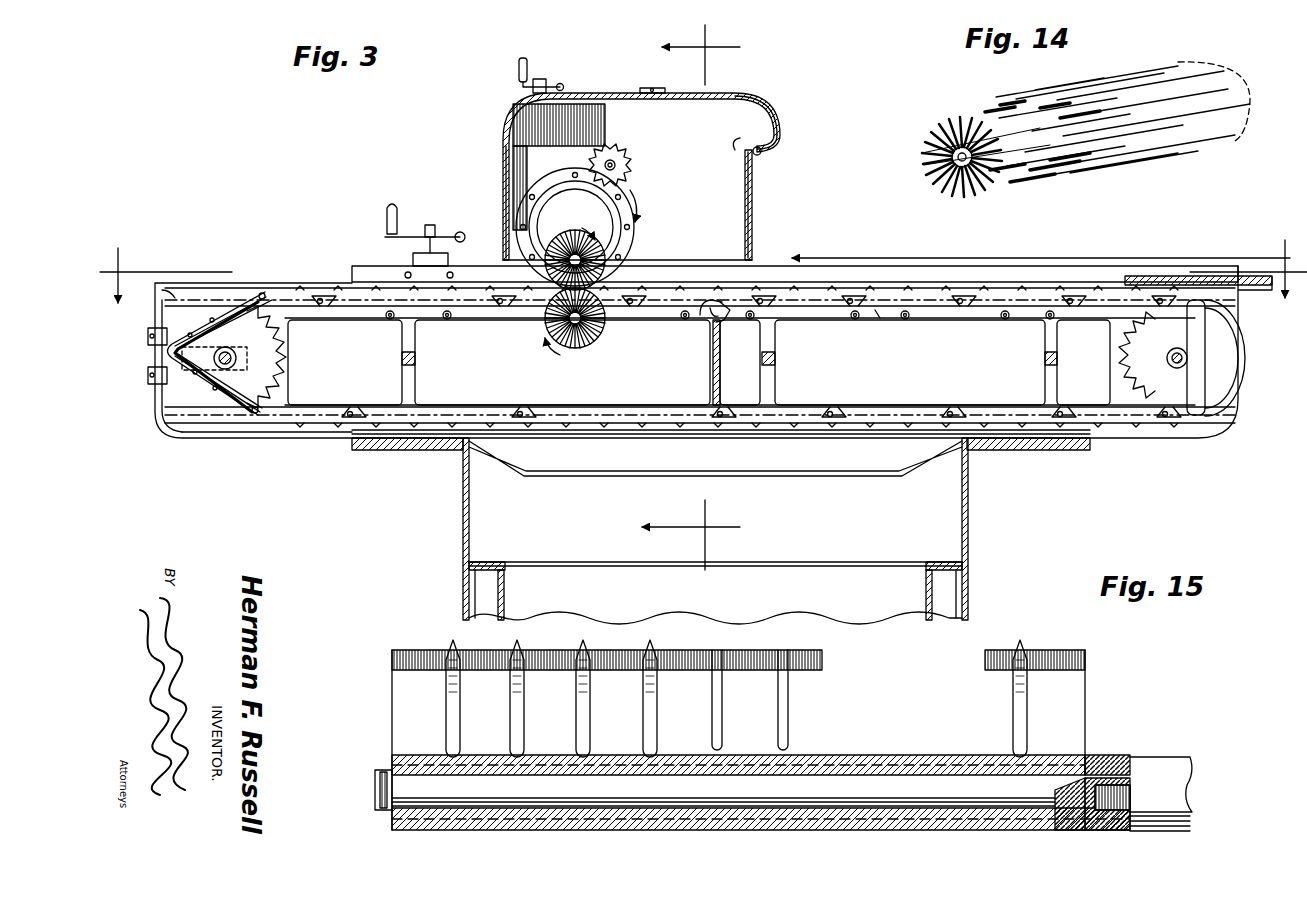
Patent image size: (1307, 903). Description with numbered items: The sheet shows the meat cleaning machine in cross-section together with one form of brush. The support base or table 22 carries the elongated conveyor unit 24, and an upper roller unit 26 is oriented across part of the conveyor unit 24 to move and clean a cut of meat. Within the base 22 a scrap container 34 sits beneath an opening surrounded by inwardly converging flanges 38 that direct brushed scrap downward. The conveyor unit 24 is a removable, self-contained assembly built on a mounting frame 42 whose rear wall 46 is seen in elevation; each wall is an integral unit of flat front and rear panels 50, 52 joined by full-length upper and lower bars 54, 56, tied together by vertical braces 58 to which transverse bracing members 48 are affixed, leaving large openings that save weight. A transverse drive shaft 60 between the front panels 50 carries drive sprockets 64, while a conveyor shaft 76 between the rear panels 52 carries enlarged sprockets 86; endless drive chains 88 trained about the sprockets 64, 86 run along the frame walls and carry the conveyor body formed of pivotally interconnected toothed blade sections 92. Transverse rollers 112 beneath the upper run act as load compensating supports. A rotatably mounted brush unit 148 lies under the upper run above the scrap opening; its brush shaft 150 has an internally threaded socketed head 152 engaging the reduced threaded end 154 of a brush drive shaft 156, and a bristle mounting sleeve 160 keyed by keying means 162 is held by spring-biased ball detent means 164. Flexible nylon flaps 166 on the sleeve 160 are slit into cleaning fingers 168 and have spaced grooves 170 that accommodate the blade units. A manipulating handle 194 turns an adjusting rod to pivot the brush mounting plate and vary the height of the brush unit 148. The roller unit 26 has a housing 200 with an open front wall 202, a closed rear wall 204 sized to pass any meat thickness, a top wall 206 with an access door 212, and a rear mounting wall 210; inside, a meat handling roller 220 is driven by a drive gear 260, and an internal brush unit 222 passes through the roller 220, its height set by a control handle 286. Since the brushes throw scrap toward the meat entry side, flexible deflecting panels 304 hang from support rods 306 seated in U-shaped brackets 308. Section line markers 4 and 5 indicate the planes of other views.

In FIG. 3, the mounting base or table 22 is at (985, 564).
In FIG. 3, the conveyor unit 24 is at (1062, 260).
In FIG. 3, the upper roller unit 26 is at (505, 115).
In FIG. 3, the scrap container 34 is at (830, 570).
In FIG. 3, the inwardly converging flanges 38 is at (830, 463).
In FIG. 3, the mounting frame 42 is at (200, 444).
In FIG. 3, the rear wall 46 is at (228, 442).
In FIG. 3, the wall bracing bars 48 is at (416, 357).
In FIG. 3, the front panel 50 is at (1238, 386).
In FIG. 3, the rear panel 52 is at (164, 408).
In FIG. 3, the upper bar 54 is at (880, 318).
In FIG. 3, the lower bar 56 is at (905, 398).
In FIG. 3, the vertical braces 58 is at (420, 387).
In FIG. 3, the transverse drive shaft 60 is at (1166, 361).
In FIG. 3, the drive sprockets 64 is at (1215, 352).
In FIG. 3, the conveyor shaft 76 is at (228, 351).
In FIG. 3, the enlarged sprockets 86 is at (282, 356).
In FIG. 3, the endless drive chains 88 is at (212, 304).
In FIG. 3, the blade sections 92 is at (225, 376).
In FIG. 3, the rollers 112 is at (470, 328).
In FIG. 3, the brush unit 148 is at (586, 352).
In FIG. 14, the brush unit 148 is at (955, 98).
In FIG. 15, the brush unit 148 is at (385, 702).
In FIG. 15, the brush shaft 150 is at (1010, 790).
In FIG. 15, the socketed head 152 is at (1095, 765).
In FIG. 15, the reduced threaded projecting end 154 is at (1120, 778).
In FIG. 15, the brush drive shaft 156 is at (1172, 780).
In FIG. 15, the bristle mounting sleeve 160 is at (915, 760).
In FIG. 15, the keying means 162 is at (390, 760).
In FIG. 15, the spring-biased ball detent means 164 is at (385, 768).
In FIG. 14, the flexible nylon flaps 166 is at (950, 143).
In FIG. 15, the flexible nylon flaps 166 is at (1088, 680).
In FIG. 15, the cleaning fingers 168 is at (1055, 648).
In FIG. 15, the spaced grooves 170 is at (745, 740).
In FIG. 3, the manipulating handle 194 is at (388, 211).
In FIG. 3, the housing 200 is at (758, 97).
In FIG. 3, the open front wall 202 is at (754, 198).
In FIG. 3, the closed rear wall 204 is at (504, 184).
In FIG. 3, the top wall 206 is at (702, 92).
In FIG. 3, the rear mounting wall 210 is at (778, 126).
In FIG. 3, the access door 212 is at (597, 92).
In FIG. 3, the meat handling roller 220 is at (576, 168).
In FIG. 3, the brush unit 222 is at (607, 259).
In FIG. 3, the drive gear 260 is at (633, 165).
In FIG. 3, the control handle 286 is at (518, 68).
In FIG. 3, the flexible scrap deflecting panels 304 is at (712, 355).
In FIG. 3, the support rod 306 is at (705, 318).
In FIG. 3, the U-shaped brackets 308 is at (728, 325).
In FIG. 3, the section line 4 is at (703, 287).
In FIG. 3, the section line 5 is at (680, 297).